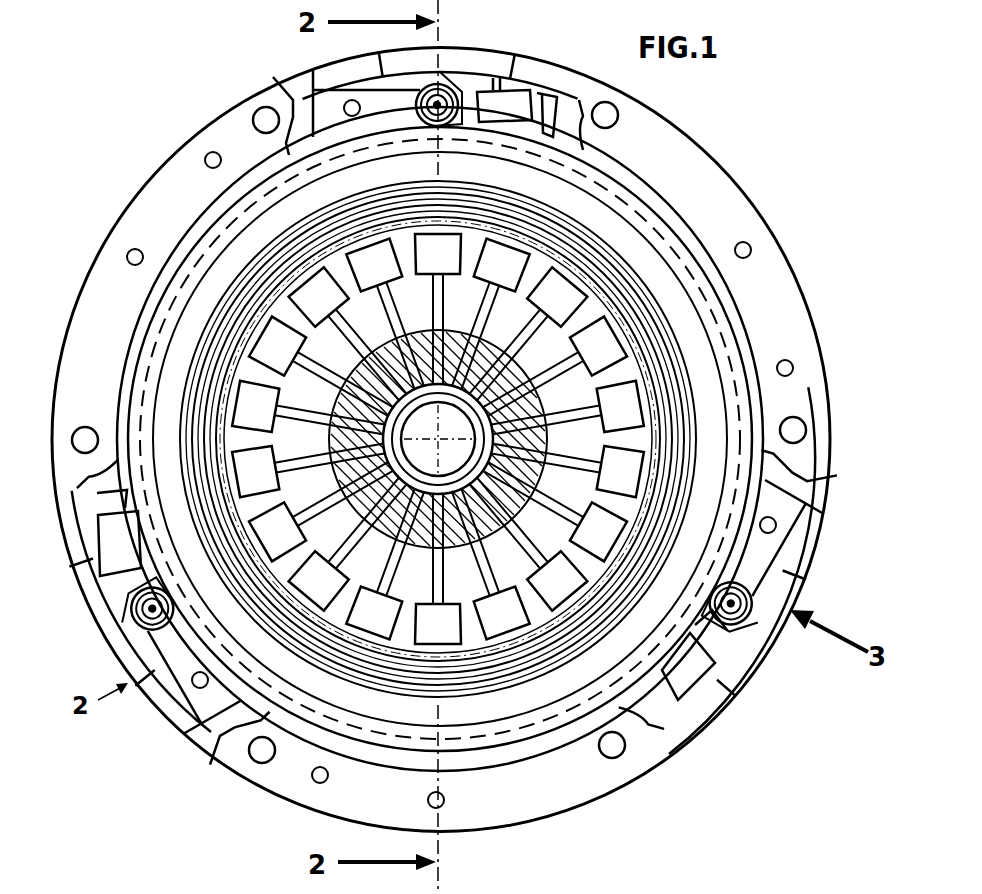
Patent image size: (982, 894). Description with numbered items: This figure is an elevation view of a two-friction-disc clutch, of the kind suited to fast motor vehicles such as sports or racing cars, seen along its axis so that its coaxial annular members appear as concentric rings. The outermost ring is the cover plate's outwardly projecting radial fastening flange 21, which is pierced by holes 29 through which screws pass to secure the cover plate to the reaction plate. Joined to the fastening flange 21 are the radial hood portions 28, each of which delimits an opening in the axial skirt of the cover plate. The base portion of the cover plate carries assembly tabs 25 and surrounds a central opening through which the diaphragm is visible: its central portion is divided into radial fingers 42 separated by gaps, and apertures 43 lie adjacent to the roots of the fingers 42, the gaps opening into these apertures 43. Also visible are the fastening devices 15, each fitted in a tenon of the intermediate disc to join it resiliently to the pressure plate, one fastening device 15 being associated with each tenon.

The fastening device 15 is at (741, 576).
The fastening flange 21 is at (702, 197).
The assembly tabs 25 is at (606, 330).
The radial hood portion 28 is at (208, 702).
The holes 29 is at (618, 113).
The radial fingers 42 is at (252, 381).
The apertures 43 is at (268, 326).